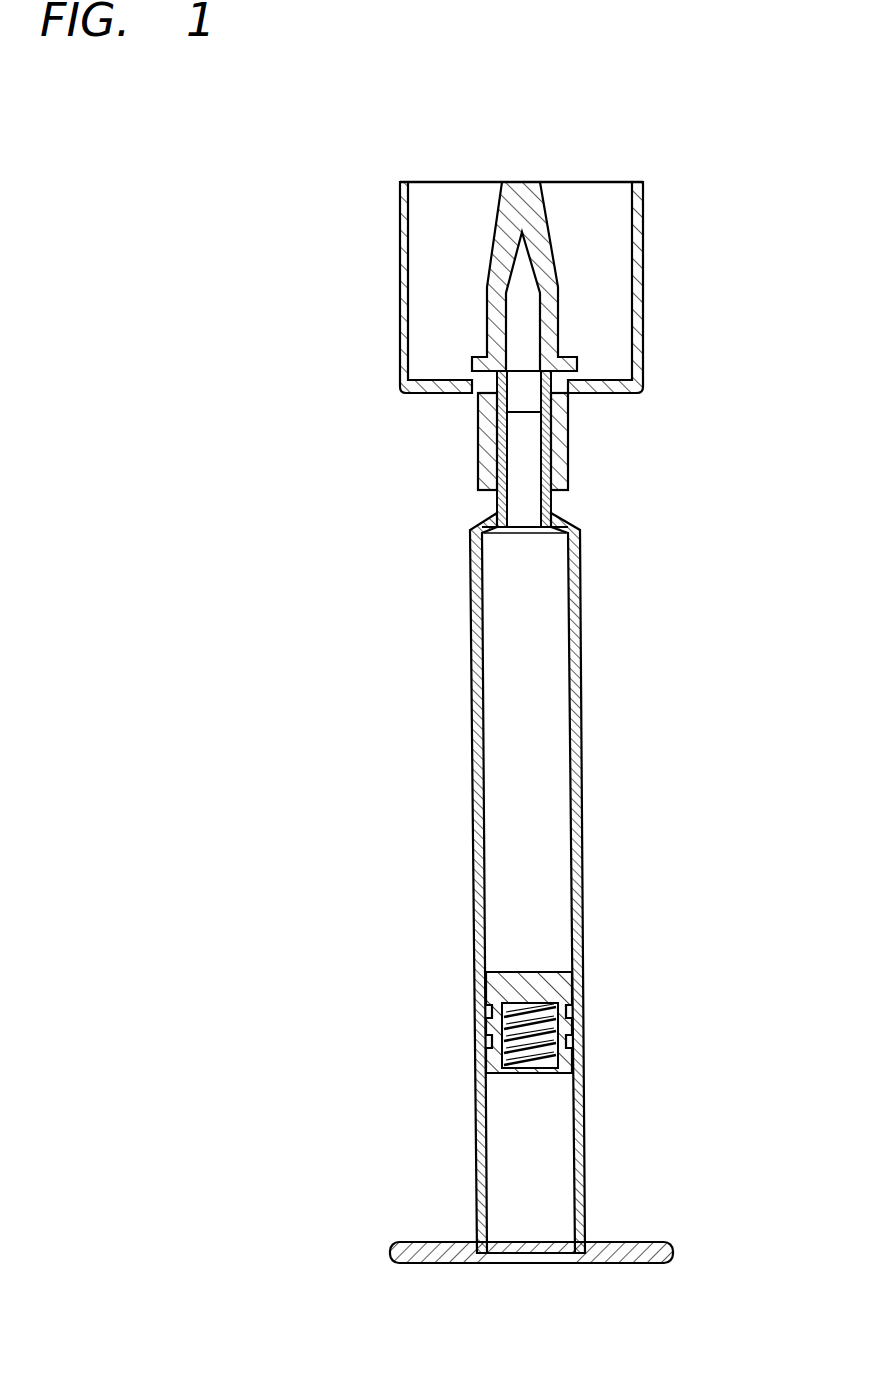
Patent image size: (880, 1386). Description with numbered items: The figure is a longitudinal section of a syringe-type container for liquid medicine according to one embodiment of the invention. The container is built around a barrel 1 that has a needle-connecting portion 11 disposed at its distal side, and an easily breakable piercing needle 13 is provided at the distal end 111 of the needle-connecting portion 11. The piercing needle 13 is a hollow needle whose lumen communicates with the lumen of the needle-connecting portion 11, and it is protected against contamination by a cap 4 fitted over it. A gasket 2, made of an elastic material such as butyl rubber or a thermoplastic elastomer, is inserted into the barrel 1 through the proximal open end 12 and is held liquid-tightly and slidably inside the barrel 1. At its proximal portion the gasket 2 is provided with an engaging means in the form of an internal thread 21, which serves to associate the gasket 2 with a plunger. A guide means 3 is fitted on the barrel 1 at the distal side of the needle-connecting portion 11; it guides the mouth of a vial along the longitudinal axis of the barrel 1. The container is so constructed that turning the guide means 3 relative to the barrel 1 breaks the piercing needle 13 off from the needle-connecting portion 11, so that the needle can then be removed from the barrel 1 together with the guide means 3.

The barrel 1 is at (592, 825).
The needle-connecting portion 11 is at (477, 428).
The distal end 111 is at (517, 400).
The proximal open end 12 is at (490, 1262).
The piercing needle 13 is at (487, 313).
The gasket 2 is at (567, 973).
The internal thread 21 is at (533, 1075).
The guide means 3 is at (643, 243).
The cap 4 is at (507, 222).